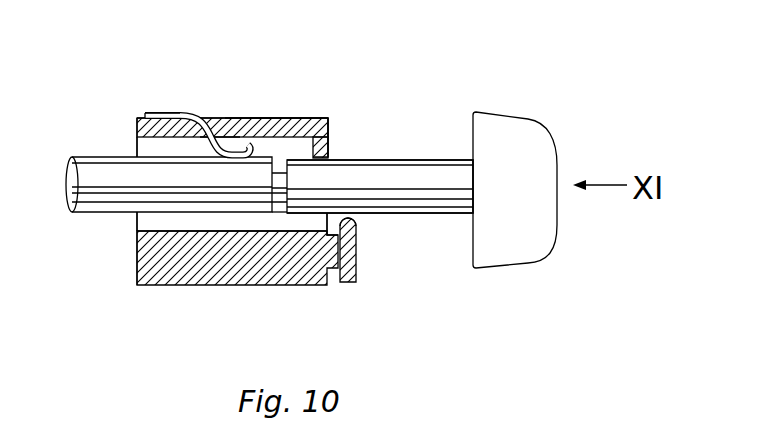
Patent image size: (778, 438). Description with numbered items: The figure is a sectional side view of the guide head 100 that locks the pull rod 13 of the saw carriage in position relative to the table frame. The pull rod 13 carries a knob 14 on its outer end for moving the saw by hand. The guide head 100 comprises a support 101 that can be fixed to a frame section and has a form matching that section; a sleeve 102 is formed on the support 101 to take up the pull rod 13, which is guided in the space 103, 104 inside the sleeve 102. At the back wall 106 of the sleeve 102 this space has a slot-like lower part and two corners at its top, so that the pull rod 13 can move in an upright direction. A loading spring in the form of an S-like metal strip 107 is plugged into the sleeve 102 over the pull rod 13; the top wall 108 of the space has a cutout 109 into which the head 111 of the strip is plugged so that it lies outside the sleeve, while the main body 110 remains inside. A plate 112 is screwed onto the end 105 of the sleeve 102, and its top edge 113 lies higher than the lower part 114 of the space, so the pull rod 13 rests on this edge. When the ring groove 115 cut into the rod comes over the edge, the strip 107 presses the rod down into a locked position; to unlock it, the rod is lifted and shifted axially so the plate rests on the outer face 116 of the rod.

The pull rod 13 is at (424, 172).
The knob 14 is at (530, 147).
The guide head 100 is at (322, 115).
The support 101 is at (162, 262).
The sleeve 102 is at (298, 128).
The space 103 is at (313, 222).
The space 104 is at (137, 150).
The end of the sleeve 105 is at (331, 136).
The back wall 106 is at (130, 253).
The metal strip 107 is at (153, 104).
The top wall 108 is at (280, 124).
The cutout 109 is at (215, 129).
The main body 110 is at (243, 123).
The head 111 is at (164, 116).
The plate 112 is at (347, 283).
The top edge 113 is at (352, 200).
The lower part 114 is at (209, 240).
The ring groove 115 is at (277, 215).
The outer face 116 is at (425, 220).